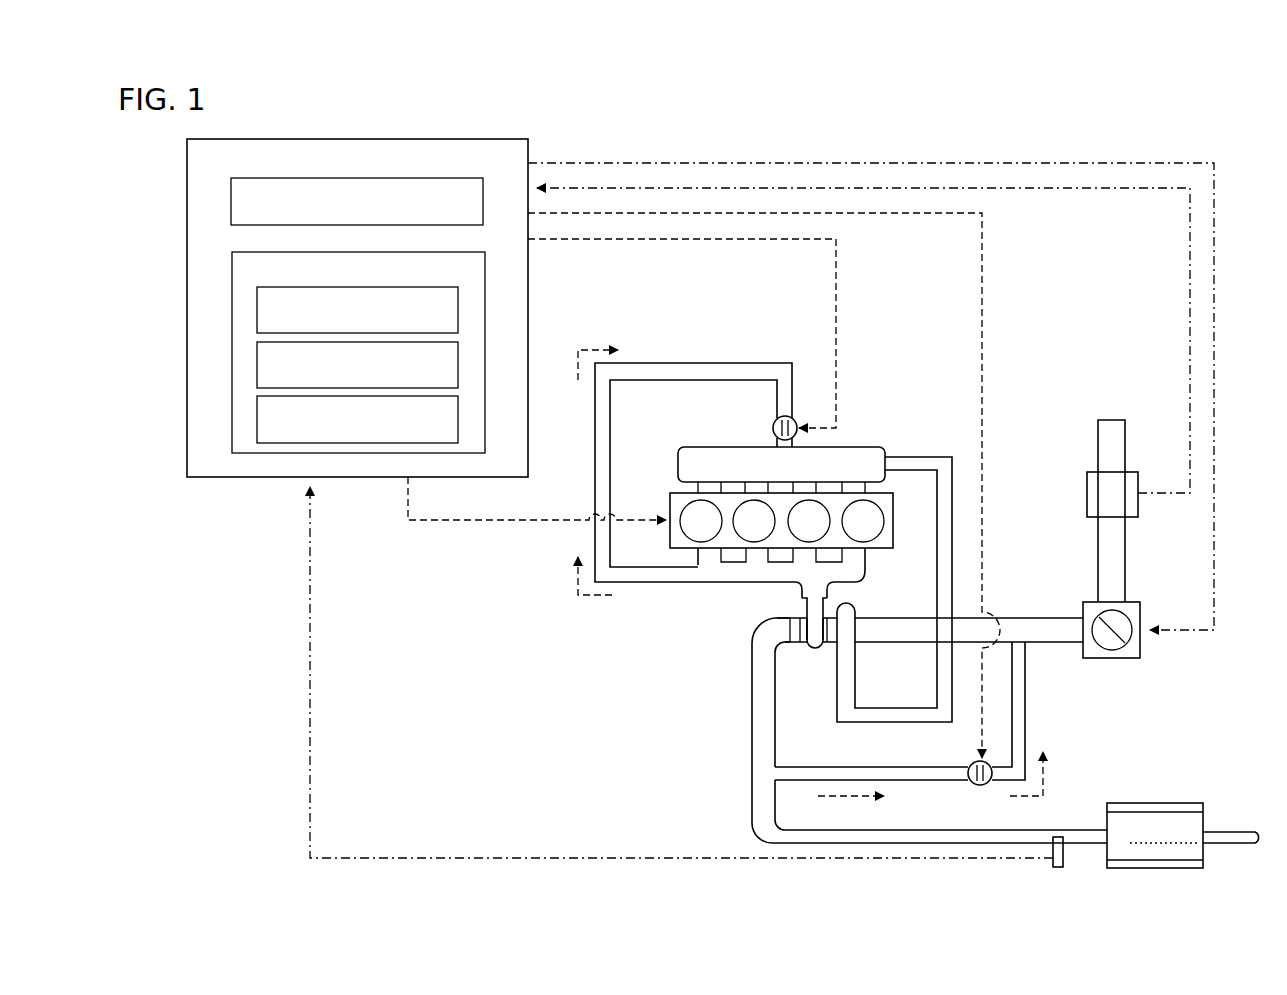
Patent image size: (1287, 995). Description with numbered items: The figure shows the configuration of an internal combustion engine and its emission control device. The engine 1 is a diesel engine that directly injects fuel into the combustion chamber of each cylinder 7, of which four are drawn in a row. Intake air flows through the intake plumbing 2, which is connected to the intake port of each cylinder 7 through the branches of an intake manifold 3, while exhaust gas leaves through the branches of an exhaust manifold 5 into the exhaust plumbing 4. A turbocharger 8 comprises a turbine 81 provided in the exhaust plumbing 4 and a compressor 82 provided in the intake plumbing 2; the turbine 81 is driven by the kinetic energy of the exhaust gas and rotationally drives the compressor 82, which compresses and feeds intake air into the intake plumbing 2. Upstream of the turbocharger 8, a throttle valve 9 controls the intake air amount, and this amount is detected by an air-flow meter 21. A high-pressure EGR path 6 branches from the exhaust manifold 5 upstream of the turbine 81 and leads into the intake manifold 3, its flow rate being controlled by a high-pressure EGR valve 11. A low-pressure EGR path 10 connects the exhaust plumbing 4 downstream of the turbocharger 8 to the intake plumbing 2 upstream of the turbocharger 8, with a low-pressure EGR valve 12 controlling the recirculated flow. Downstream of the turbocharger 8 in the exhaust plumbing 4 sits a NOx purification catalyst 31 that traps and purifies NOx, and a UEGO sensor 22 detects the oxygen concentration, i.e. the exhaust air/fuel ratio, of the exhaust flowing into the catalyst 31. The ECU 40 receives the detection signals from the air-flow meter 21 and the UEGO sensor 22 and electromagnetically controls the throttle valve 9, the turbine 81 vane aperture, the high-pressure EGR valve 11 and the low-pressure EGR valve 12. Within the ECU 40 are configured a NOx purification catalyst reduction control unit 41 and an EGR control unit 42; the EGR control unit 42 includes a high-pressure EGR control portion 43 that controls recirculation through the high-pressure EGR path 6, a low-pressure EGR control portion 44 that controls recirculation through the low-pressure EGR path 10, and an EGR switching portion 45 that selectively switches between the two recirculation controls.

The engine 1 is at (667, 512).
The intake plumbing 2 is at (937, 542).
The intake manifold 3 is at (678, 468).
The exhaust plumbing 4 is at (752, 740).
The exhaust manifold 5 is at (727, 585).
The high-pressure EGR path 6 is at (698, 362).
The cylinder 7 is at (693, 545).
The turbocharger 8 is at (835, 655).
The turbine 81 is at (805, 652).
The compressor 82 is at (855, 610).
The throttle valve 9 is at (1141, 615).
The low-pressure EGR path 10 is at (918, 781).
The high-pressure EGR valve 11 is at (768, 428).
The low-pressure EGR valve 12 is at (979, 786).
The air-flow meter 21 is at (1090, 470).
The UEGO sensor 22 is at (1059, 869).
The NOx purification catalyst 31 is at (1180, 869).
The ECU 40 is at (489, 138).
The NOx purification catalyst reduction control unit 41 is at (231, 199).
The EGR control unit 42 is at (487, 262).
The high-pressure EGR control portion 43 is at (257, 310).
The low-pressure EGR control portion 44 is at (257, 366).
The EGR switching portion 45 is at (257, 420).